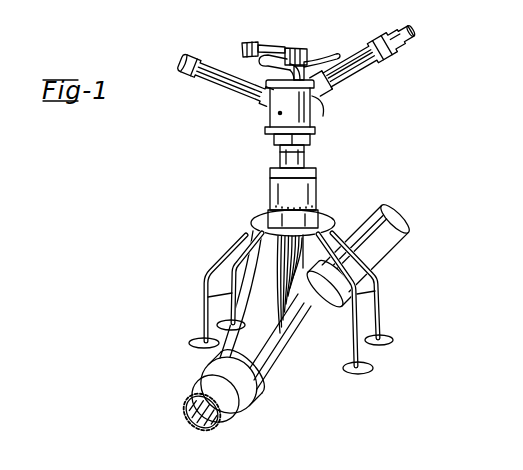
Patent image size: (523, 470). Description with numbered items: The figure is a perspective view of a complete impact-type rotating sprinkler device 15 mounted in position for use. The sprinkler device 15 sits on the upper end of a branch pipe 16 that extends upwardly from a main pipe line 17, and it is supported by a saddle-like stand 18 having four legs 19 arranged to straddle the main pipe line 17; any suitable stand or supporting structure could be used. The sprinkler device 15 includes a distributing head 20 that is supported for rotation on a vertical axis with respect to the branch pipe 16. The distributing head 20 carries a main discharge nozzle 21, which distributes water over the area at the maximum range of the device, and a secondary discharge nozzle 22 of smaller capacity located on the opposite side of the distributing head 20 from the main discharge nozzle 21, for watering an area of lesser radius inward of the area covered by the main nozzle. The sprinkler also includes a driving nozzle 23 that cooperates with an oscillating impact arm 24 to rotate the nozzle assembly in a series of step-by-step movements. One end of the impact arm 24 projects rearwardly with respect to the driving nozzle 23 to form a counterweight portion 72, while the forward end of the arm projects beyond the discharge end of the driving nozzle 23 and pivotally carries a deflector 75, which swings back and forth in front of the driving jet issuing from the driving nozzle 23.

The sprinkler device 15 is at (349, 110).
The branch pipe 16 is at (304, 160).
The main pipe line 17 is at (243, 408).
The saddle-like stand 18 is at (279, 215).
The legs 19 is at (230, 297).
The distributing head 20 is at (272, 122).
The main discharge nozzle 21 is at (418, 27).
The secondary discharge nozzle 22 is at (190, 69).
The driving nozzle 23 is at (281, 55).
The impact arm 24 is at (267, 45).
The counterweight portion 72 is at (335, 57).
The deflector 75 is at (252, 68).